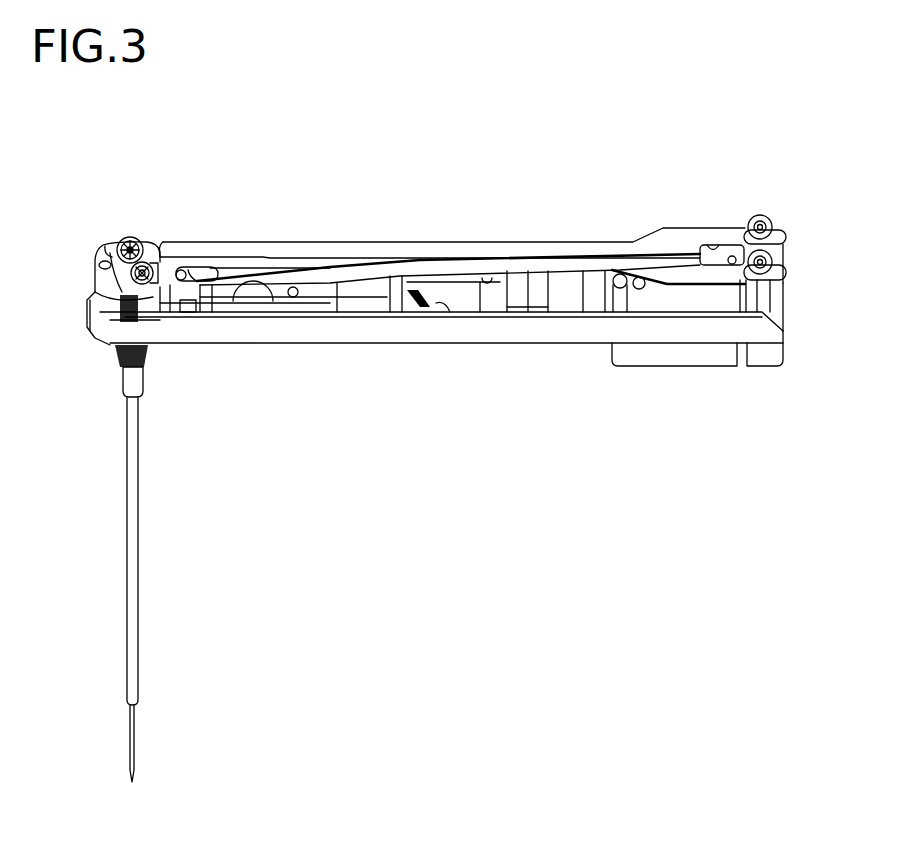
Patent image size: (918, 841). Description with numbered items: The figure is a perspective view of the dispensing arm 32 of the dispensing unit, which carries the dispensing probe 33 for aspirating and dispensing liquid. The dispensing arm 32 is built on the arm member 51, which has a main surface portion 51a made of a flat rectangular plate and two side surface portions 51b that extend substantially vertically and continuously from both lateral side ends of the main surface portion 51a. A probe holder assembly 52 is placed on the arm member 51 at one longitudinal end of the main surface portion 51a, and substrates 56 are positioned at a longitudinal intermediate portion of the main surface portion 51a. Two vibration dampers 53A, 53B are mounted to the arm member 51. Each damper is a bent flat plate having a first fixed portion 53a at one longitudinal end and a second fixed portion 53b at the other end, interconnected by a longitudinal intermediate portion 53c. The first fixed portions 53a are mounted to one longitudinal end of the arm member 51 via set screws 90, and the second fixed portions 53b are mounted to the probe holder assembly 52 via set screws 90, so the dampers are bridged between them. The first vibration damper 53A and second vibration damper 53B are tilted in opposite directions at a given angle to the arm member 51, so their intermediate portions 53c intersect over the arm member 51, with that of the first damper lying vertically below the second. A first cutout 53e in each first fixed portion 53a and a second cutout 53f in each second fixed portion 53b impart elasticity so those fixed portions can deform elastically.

The dispensing arm 32 is at (457, 175).
The dispensing probe 33 is at (150, 592).
The arm member 51 is at (478, 325).
The main surface portion 51a is at (318, 335).
The side surface portions 51b is at (536, 331).
The probe holder assembly 52 is at (112, 223).
The first vibration damper 53A is at (548, 258).
The second vibration damper 53B is at (486, 228).
The first fixed portion 53a is at (782, 233).
The second fixed portion 53b is at (167, 228).
The longitudinal intermediate portion 53c is at (372, 228).
The first cutout 53e is at (714, 245).
The second cutout 53f is at (186, 228).
The substrates 56 is at (186, 316).
The set screws 90 is at (150, 228).